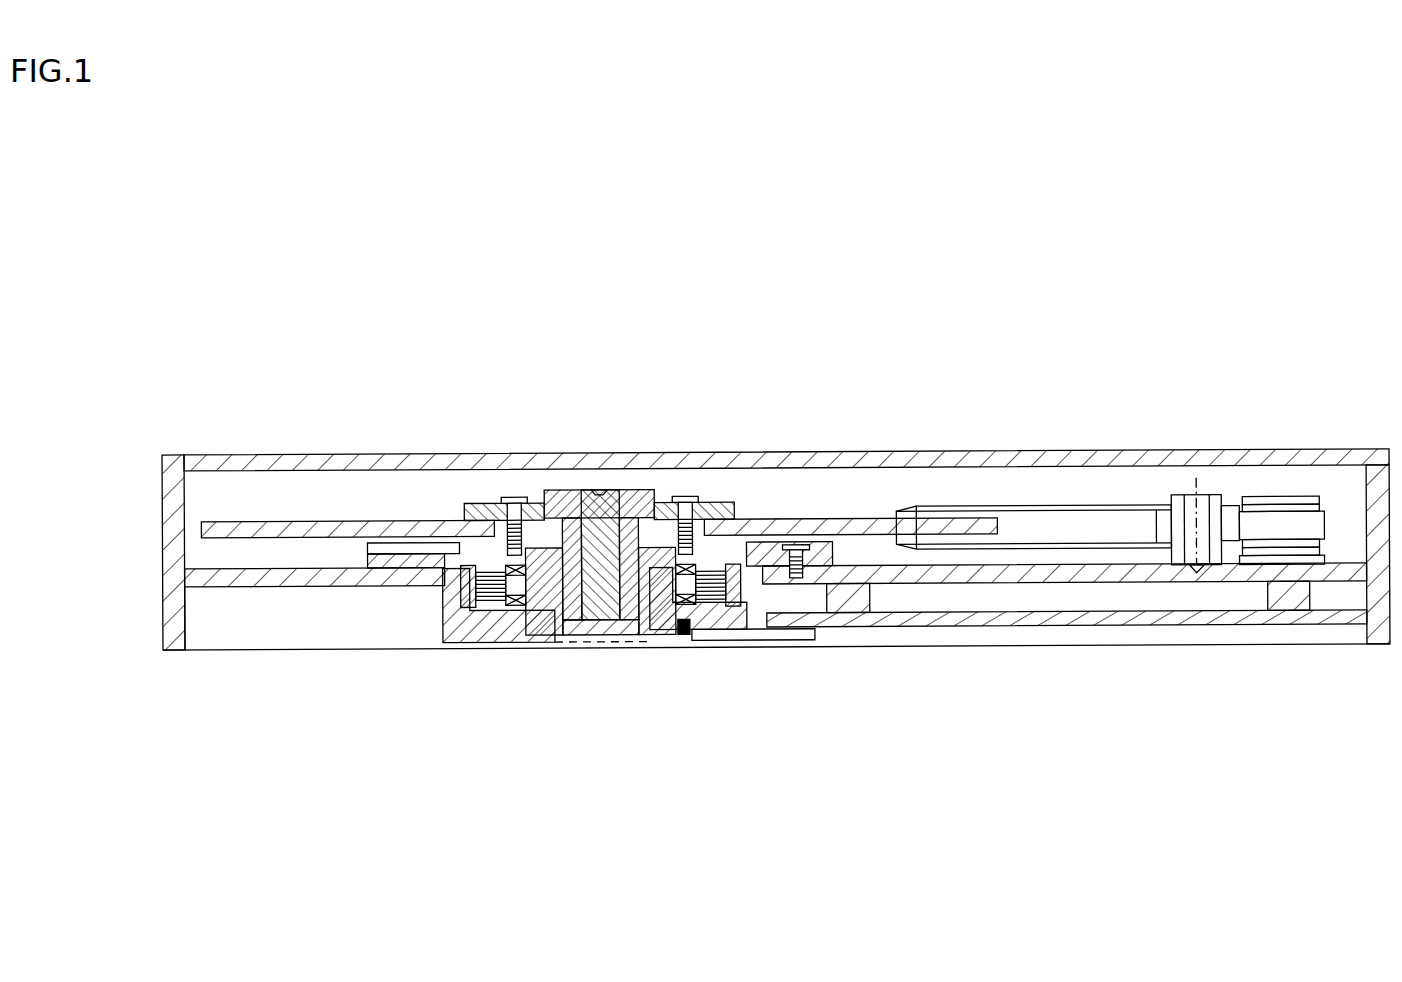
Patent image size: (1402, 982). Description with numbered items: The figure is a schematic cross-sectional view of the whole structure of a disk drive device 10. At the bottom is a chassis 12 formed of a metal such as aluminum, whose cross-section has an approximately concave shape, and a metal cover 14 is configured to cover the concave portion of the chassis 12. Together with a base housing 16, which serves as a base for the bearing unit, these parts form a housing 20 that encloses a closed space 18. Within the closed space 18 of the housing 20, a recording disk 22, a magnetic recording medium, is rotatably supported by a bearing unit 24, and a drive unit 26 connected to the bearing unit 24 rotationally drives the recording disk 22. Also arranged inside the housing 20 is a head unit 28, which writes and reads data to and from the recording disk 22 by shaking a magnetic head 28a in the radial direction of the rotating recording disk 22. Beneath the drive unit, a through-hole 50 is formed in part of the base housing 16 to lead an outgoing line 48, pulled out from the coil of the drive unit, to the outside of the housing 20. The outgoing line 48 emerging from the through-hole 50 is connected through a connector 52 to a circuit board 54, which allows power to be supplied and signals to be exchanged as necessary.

The disk drive device 10 is at (757, 450).
The chassis 12 is at (310, 580).
The cover 14 is at (390, 463).
The base housing 16 is at (450, 631).
The closed space 18 is at (279, 510).
The housing 20 is at (160, 498).
The recording disk 22 is at (828, 523).
The bearing unit 24 is at (652, 494).
The drive unit 26 is at (518, 614).
The head unit 28 is at (1100, 476).
The magnetic head 28a is at (903, 519).
The outgoing line 48 is at (710, 633).
The through-hole 50 is at (683, 636).
The connector 52 is at (792, 640).
The circuit board 54 is at (1022, 631).